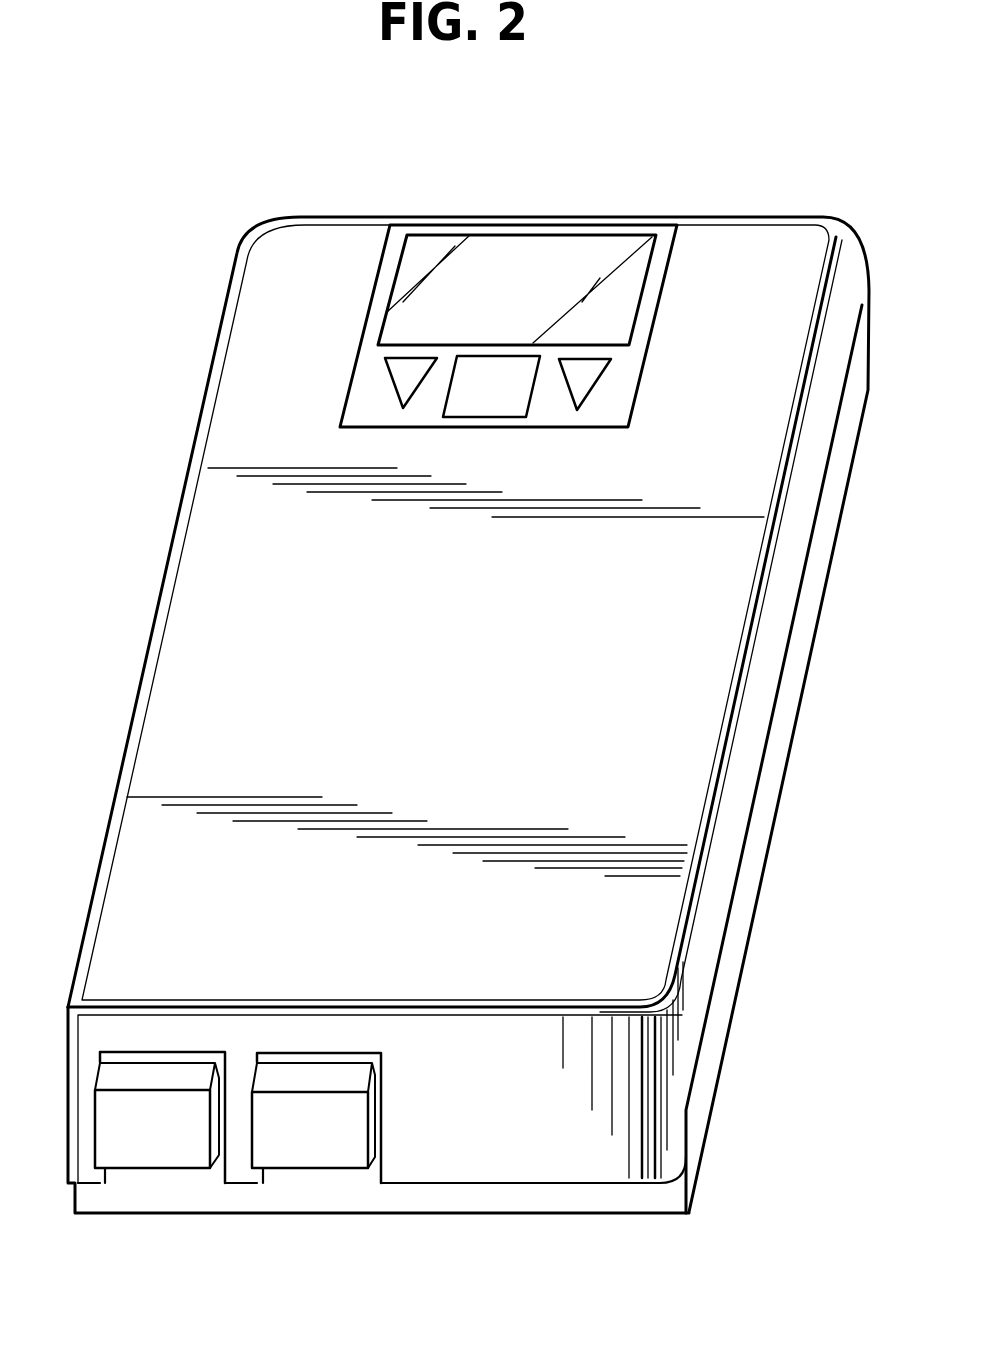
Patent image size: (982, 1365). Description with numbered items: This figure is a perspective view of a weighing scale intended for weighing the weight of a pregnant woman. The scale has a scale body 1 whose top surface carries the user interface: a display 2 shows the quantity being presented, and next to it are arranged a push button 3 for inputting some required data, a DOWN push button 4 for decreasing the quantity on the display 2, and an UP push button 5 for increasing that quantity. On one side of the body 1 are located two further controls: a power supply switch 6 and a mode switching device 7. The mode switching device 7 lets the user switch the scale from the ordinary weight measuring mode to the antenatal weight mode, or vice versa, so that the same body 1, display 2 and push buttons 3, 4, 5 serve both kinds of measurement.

The scale body 1 is at (237, 517).
The display 2 is at (528, 272).
The push button 3 is at (480, 365).
The DOWN push button 4 is at (407, 375).
The UP push button 5 is at (588, 380).
The power supply switch 6 is at (152, 1153).
The mode switching device 7 is at (315, 1155).